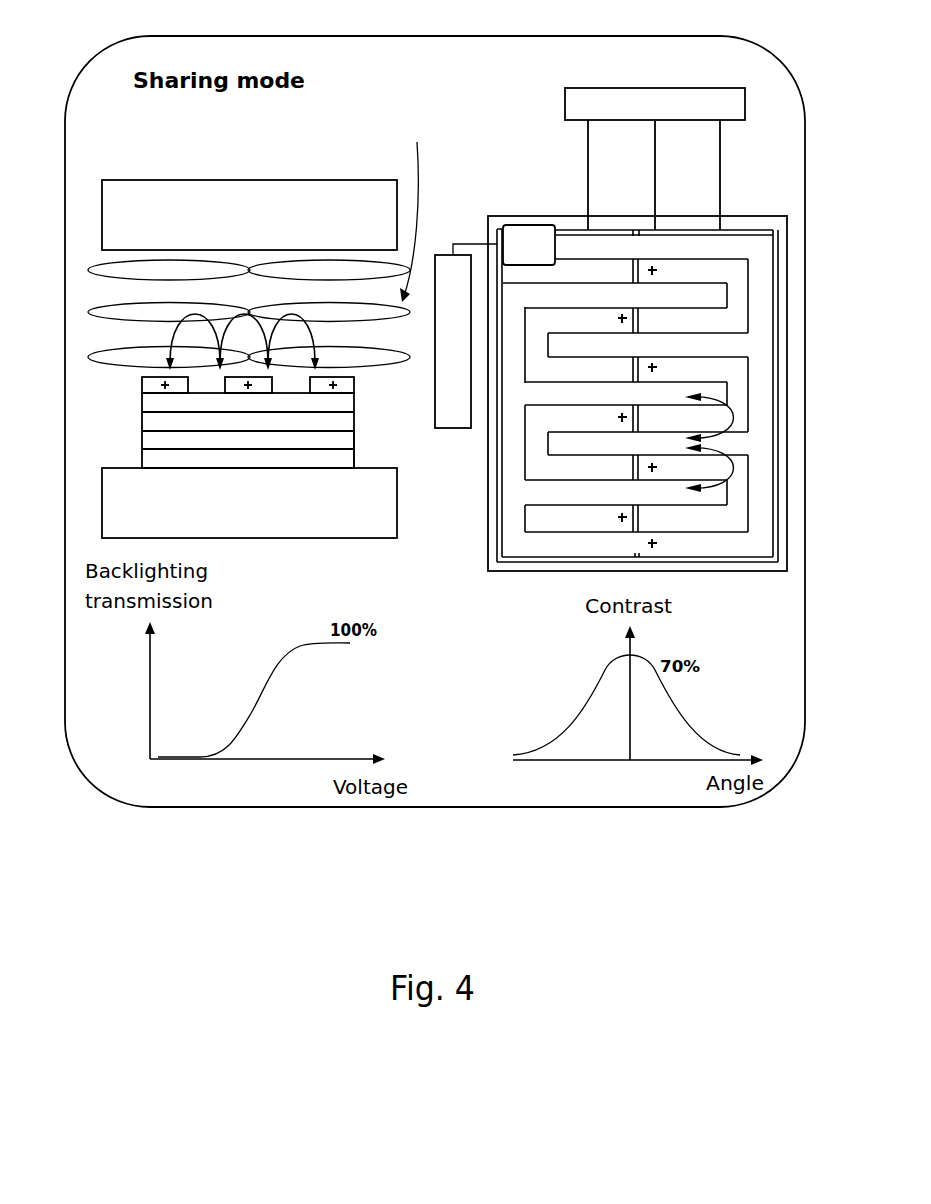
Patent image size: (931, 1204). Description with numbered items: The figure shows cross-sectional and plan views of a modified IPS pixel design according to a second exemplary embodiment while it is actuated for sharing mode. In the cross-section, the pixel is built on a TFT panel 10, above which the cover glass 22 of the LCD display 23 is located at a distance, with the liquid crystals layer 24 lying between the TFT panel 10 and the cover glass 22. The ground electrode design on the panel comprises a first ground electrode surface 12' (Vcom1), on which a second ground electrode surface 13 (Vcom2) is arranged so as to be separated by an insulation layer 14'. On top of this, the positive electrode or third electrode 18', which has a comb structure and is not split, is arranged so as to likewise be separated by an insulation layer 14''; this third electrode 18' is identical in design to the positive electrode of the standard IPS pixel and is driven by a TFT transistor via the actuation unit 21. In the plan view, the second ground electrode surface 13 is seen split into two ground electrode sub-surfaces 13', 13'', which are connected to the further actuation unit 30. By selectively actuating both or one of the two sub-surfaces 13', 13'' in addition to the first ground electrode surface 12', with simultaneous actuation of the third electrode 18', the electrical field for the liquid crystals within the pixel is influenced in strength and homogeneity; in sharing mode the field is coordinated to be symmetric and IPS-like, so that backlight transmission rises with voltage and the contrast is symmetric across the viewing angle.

The TFT panel 10 is at (390, 513).
The first ground electrode surface 12' is at (470, 374).
The second ground electrode surface 13 is at (211, 430).
The ground electrode sub-surface 13' is at (637, 370).
The ground electrode sub-surface 13'' is at (625, 360).
The insulation layer 14' is at (289, 418).
The insulation layer 14'' is at (211, 401).
The third electrode 18' is at (418, 465).
The actuation unit for TFT 21 is at (447, 255).
The cover glass 22 is at (132, 185).
The LCD display 23 is at (416, 206).
The liquid crystals layer 24 is at (114, 271).
The actuation unit for Vcom1 and Vcom2 30 is at (630, 93).